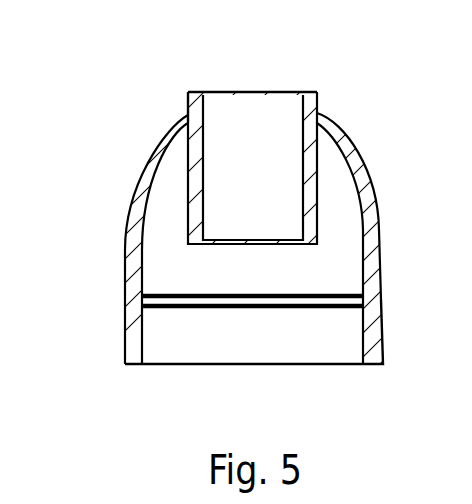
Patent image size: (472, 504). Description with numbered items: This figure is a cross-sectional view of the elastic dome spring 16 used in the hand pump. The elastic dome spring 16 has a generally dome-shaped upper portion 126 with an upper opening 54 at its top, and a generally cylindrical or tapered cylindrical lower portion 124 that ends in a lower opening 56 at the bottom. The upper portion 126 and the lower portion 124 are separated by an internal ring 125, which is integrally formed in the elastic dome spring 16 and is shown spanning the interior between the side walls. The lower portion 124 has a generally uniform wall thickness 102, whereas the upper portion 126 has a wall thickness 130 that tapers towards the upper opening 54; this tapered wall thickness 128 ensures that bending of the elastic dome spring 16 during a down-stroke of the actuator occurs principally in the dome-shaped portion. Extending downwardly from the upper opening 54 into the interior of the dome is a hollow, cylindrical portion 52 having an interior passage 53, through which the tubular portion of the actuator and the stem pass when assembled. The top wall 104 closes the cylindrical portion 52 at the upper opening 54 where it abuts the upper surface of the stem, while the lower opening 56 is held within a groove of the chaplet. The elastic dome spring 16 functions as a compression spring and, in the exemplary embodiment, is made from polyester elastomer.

The elastic dome spring 16 is at (382, 192).
The hollow cylindrical portion 52 is at (284, 105).
The interior passage 53 is at (224, 218).
The upper opening 54 is at (188, 92).
The lower opening 56 is at (125, 362).
The wall thickness 102 is at (378, 322).
The top wall of inner tube 104 is at (317, 92).
The lower portion 124 is at (125, 336).
The internal ring 125 is at (367, 297).
The upper portion 126 is at (137, 182).
The tapered wall thickness 128 is at (342, 130).
The wall thickness 130 is at (380, 240).